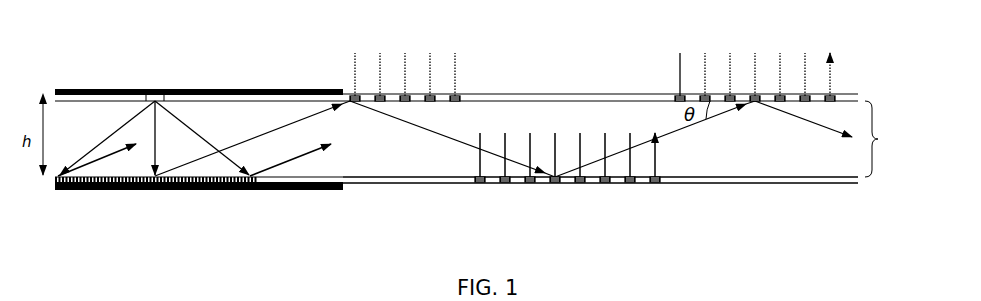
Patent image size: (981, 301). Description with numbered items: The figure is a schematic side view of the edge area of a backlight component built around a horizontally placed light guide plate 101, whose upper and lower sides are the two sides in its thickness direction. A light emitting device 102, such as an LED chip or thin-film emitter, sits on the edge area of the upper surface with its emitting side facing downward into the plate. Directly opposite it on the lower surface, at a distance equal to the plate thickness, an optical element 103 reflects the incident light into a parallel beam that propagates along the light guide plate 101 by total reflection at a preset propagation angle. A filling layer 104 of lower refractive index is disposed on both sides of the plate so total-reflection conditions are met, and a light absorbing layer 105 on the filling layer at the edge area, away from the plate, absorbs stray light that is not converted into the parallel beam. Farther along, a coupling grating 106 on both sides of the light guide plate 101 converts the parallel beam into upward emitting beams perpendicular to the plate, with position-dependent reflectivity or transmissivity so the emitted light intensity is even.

The light guide plate 101 is at (490, 138).
The light emitting device 102 is at (149, 94).
The optical element 103 is at (265, 190).
The filling layer 104 is at (712, 178).
The light absorbing layer 105 is at (262, 88).
The coupling grating 106 is at (463, 97).